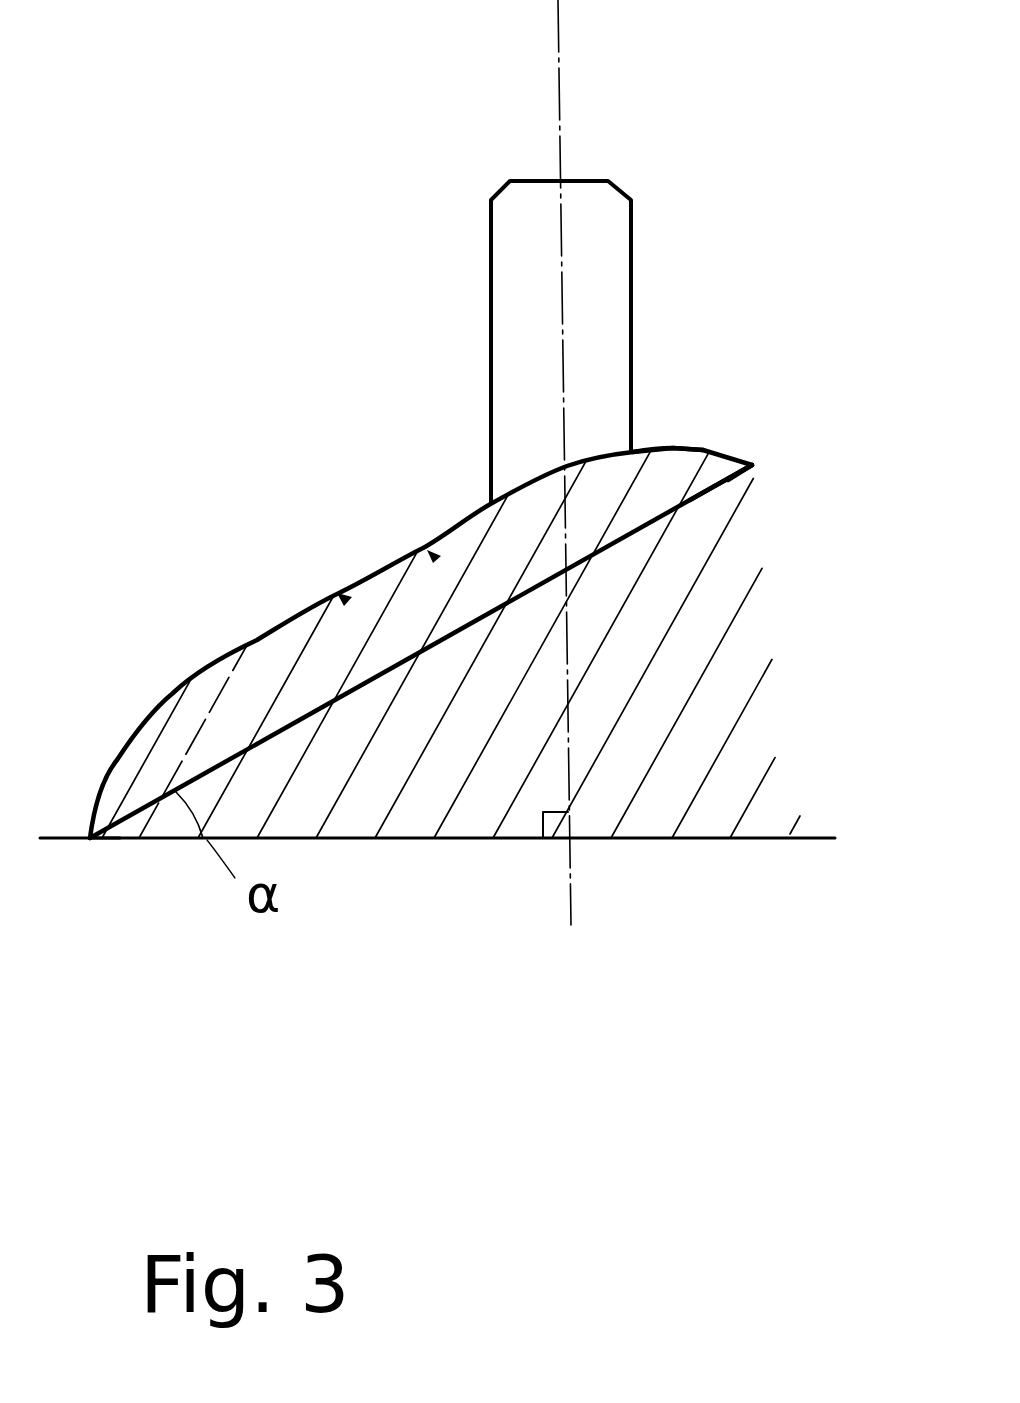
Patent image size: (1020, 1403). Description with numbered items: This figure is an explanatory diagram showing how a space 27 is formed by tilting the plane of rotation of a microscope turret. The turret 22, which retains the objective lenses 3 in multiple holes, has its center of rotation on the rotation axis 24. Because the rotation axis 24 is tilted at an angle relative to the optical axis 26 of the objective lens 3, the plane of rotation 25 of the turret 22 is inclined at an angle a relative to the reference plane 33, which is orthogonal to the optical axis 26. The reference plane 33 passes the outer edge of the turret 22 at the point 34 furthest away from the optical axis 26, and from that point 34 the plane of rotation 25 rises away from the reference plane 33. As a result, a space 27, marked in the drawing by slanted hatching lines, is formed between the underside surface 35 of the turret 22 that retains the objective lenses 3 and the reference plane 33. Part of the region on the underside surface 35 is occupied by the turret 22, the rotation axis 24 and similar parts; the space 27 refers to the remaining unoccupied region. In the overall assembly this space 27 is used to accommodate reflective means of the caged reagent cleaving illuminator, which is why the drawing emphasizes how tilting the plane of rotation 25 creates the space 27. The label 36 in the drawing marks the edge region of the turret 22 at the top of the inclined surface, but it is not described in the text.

The objective lens 3 is at (593, 227).
The turret 22 is at (659, 466).
The rotation axis 24 is at (397, 603).
The plane of rotation 25 is at (290, 742).
The optical axis 26 is at (563, 138).
The space 27 is at (490, 778).
The reference plane 33 is at (433, 840).
The point 34 is at (92, 842).
The underside surface 35 is at (720, 490).
The tip of cam 36 is at (753, 465).